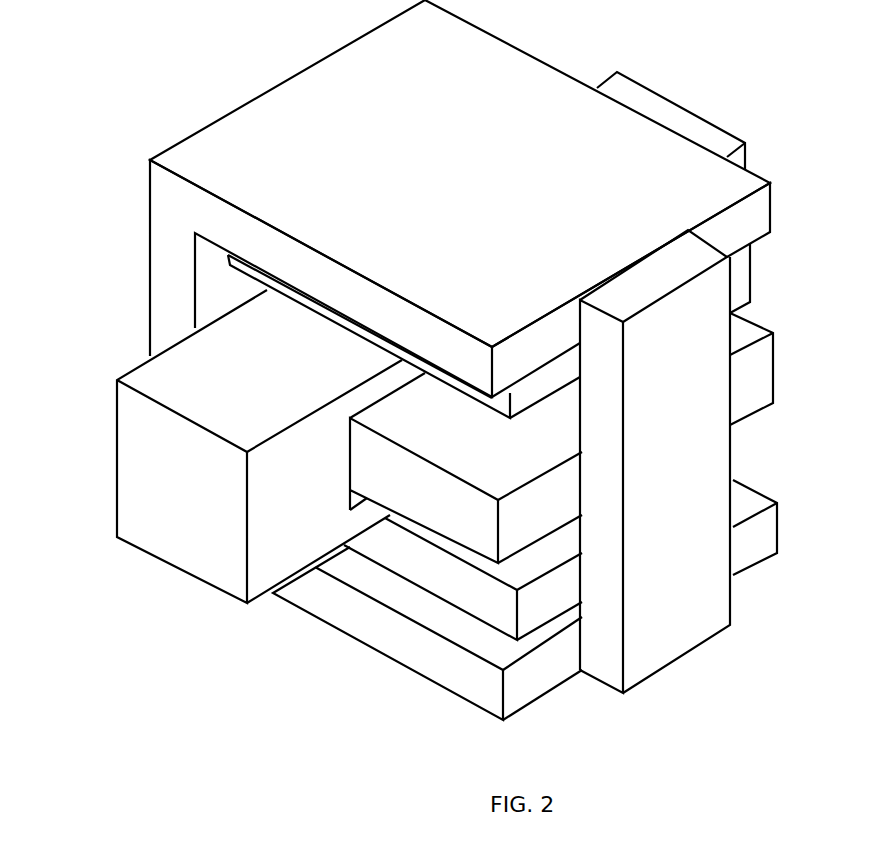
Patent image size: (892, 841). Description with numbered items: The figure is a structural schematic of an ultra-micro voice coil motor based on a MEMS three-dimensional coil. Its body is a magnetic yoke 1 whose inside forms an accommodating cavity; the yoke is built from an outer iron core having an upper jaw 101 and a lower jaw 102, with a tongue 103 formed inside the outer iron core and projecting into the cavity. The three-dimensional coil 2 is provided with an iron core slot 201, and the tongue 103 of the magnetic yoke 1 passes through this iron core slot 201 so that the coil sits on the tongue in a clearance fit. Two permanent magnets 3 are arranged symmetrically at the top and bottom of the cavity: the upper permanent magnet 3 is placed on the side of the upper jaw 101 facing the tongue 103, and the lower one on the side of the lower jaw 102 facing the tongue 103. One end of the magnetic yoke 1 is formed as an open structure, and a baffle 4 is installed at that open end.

The magnetic yoke 1 is at (424, 360).
The upper jaw 101 is at (292, 100).
The lower jaw 102 is at (360, 612).
The tongue 103 is at (565, 490).
The three-dimensional coil 2 is at (316, 465).
The iron core slot 201 is at (350, 490).
The permanent magnet 3 is at (540, 385).
The baffle 4 is at (705, 480).